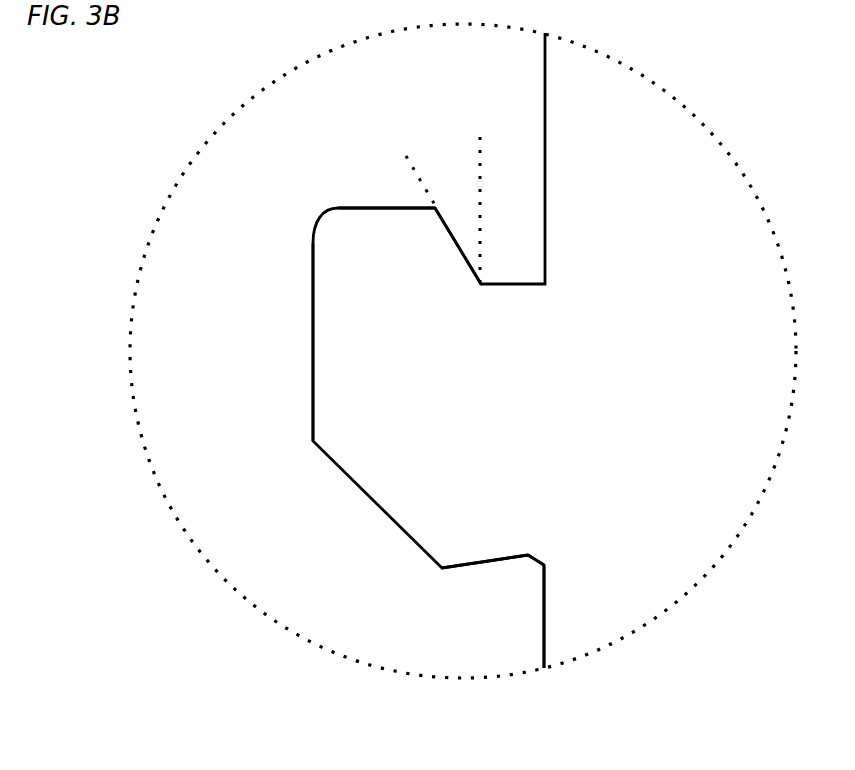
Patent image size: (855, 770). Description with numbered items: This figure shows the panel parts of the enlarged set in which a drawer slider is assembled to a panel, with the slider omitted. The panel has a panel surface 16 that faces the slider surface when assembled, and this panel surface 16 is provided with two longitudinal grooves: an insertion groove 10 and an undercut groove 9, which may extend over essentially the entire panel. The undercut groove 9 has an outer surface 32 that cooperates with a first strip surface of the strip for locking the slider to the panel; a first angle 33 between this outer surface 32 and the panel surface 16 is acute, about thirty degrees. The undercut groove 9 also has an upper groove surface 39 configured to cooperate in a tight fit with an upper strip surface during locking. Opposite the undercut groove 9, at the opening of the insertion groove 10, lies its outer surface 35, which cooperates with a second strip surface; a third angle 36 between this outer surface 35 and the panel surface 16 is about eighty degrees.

The undercut groove 9 is at (408, 250).
The insertion groove 10 is at (518, 365).
The panel surface 16 is at (543, 587).
The outer surface of undercut groove 32 is at (464, 255).
The first angle 33 is at (418, 172).
The outer surface of insertion groove 35 is at (492, 560).
The third angle 36 is at (542, 627).
The upper groove surface 39 is at (401, 207).